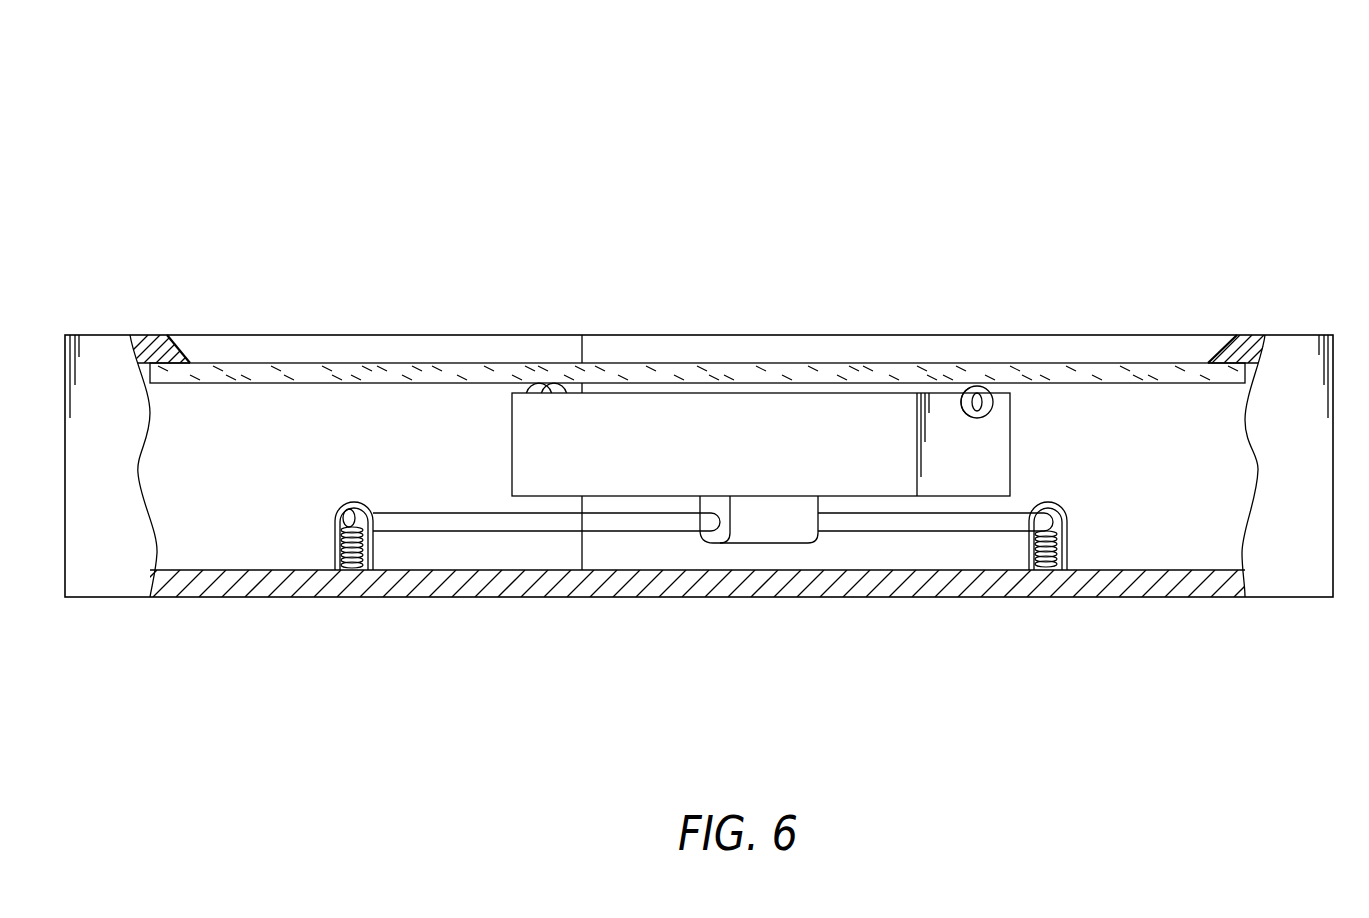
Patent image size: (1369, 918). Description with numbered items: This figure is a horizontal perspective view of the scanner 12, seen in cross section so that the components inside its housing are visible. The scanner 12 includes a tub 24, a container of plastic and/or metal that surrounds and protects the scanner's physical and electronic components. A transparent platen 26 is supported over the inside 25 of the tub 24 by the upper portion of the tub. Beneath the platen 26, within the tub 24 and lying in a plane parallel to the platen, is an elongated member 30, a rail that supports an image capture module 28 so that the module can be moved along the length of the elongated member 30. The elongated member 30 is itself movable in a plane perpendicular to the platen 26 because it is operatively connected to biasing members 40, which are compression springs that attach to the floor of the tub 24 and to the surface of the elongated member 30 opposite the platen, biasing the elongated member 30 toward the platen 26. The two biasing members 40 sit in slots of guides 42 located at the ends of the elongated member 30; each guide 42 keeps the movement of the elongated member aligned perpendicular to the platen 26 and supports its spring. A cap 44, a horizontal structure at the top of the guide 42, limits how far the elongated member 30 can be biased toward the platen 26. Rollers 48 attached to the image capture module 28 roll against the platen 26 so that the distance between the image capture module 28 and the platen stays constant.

The scanner 12 is at (1011, 145).
The tub 24 is at (160, 342).
The inside 25 is at (1090, 405).
The transparent platen 26 is at (372, 370).
The image capture module 28 is at (856, 473).
The elongated member 30 is at (508, 522).
The biasing members 40 is at (348, 568).
The guides 42 is at (373, 549).
The cap 44 is at (347, 502).
The rollers 48 is at (552, 387).